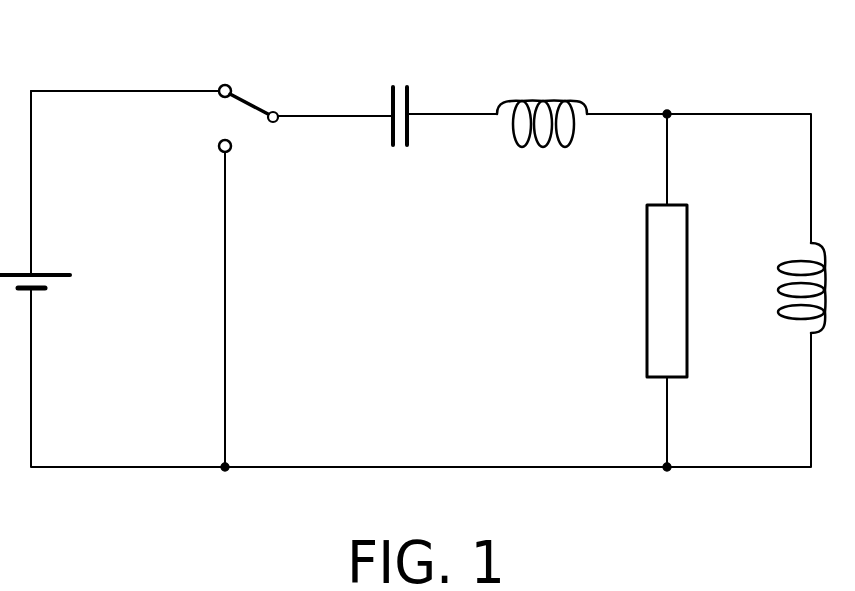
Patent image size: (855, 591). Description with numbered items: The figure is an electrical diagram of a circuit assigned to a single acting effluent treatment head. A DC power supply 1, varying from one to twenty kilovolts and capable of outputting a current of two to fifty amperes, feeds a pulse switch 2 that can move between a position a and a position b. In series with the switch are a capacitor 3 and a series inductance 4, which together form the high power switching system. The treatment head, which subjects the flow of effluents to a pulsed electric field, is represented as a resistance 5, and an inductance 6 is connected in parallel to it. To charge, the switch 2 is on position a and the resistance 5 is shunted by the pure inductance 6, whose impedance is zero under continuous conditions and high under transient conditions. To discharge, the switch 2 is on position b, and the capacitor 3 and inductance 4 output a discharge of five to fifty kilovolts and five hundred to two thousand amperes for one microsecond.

The DC power supply 1 is at (47, 280).
The pulse switch 2 is at (263, 103).
The capacitor 3 is at (404, 86).
The series inductance 4 is at (556, 100).
The effluent treatment head 5 is at (654, 308).
The inductance 6 is at (792, 262).